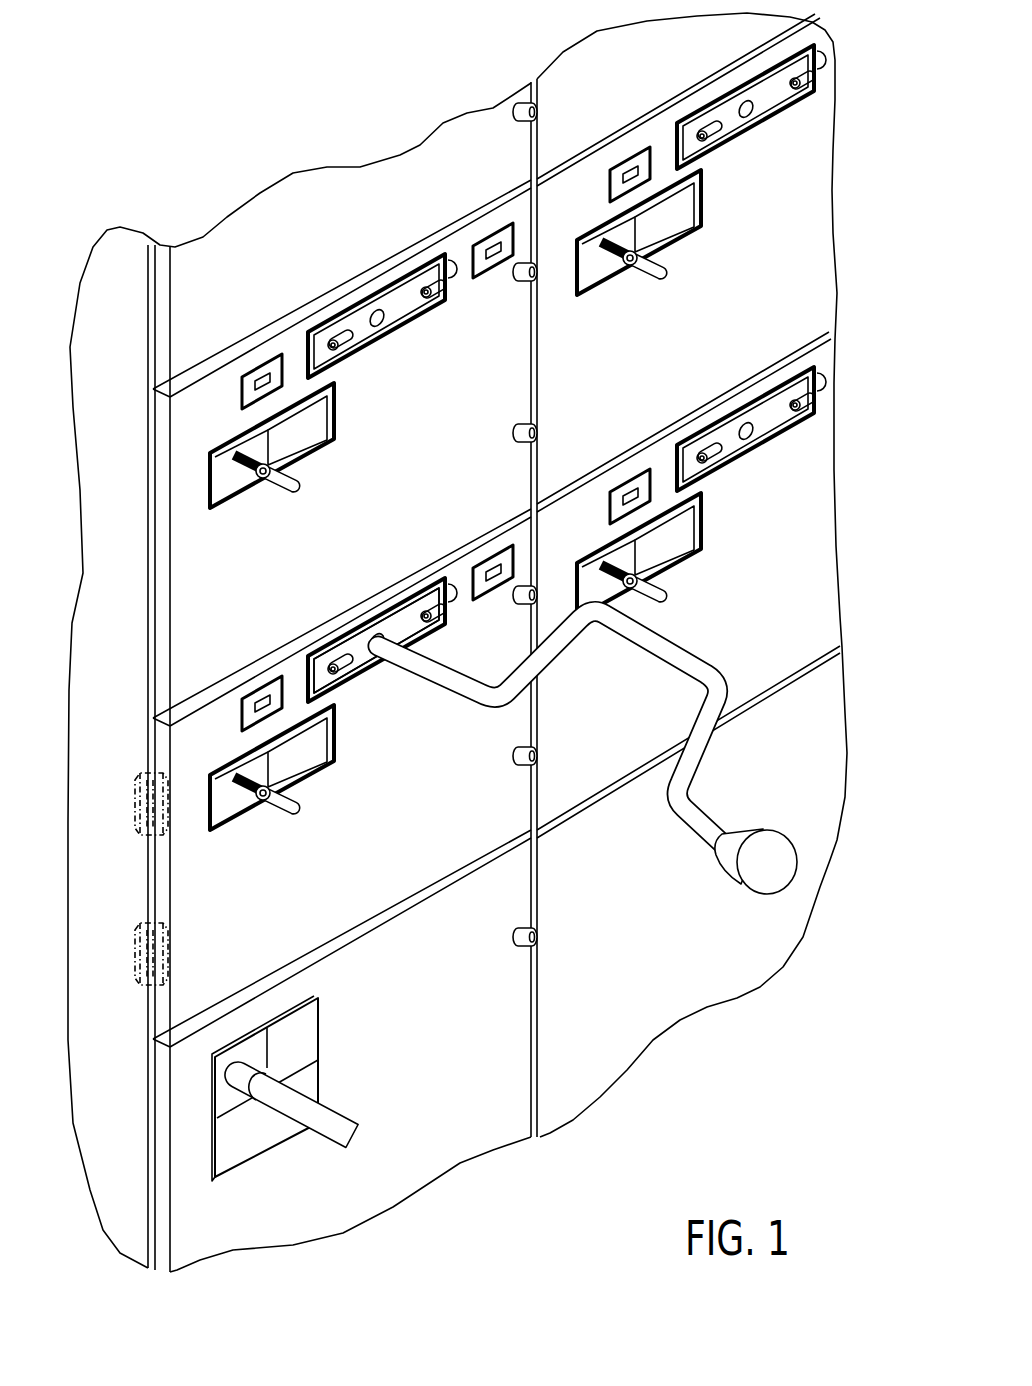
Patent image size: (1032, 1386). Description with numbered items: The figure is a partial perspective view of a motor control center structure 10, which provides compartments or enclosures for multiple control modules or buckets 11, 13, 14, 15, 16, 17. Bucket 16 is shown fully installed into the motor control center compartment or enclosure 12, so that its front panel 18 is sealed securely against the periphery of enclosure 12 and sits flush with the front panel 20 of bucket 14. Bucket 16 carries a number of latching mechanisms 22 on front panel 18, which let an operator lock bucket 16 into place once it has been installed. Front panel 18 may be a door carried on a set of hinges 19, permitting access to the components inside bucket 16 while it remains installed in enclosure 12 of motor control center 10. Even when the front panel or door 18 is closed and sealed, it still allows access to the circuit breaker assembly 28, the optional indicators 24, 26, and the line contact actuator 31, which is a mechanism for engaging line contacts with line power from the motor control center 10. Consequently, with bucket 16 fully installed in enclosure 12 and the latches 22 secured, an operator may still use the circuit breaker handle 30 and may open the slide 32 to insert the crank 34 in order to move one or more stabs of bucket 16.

The motor control center structure 10 is at (866, 192).
The bucket 11 is at (815, 265).
The enclosure 12 is at (148, 883).
The bucket 13 is at (162, 283).
The bucket 14 is at (160, 1098).
The bucket 15 is at (822, 762).
The bucket 16 is at (152, 728).
The bucket 17 is at (818, 538).
The front panel 18 is at (342, 701).
The hinges 19 is at (137, 807).
The front panel 20 is at (414, 1110).
The latching mechanisms 22 is at (535, 590).
The indicator 24 is at (283, 690).
The indicator 26 is at (522, 555).
The circuit breaker assembly 28 is at (318, 758).
The circuit breaker handle 30 is at (275, 813).
The line contact actuator 31 is at (338, 632).
The slide 32 is at (408, 625).
The crank 34 is at (669, 640).